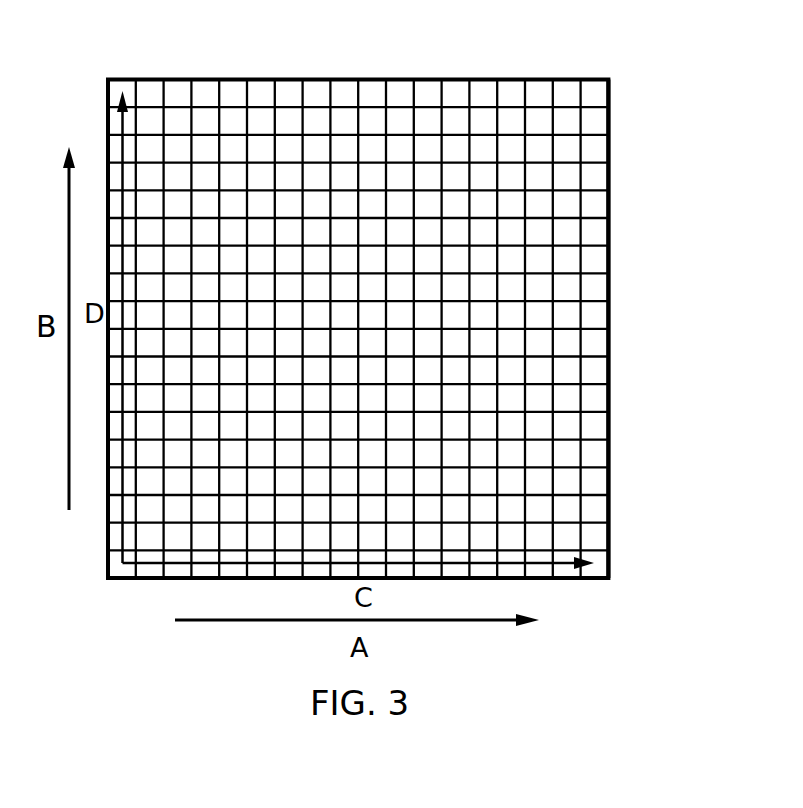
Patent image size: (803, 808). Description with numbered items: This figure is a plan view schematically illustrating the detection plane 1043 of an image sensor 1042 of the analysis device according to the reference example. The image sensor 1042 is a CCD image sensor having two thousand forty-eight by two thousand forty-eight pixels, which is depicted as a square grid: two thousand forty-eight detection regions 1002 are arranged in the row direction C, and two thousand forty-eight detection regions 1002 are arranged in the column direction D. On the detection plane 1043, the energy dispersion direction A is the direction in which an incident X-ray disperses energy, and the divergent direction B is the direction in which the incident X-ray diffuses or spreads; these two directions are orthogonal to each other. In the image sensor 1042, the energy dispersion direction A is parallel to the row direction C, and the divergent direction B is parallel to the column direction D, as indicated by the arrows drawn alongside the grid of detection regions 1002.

The detection region 1002 is at (122, 88).
The image sensor 1042 is at (626, 64).
The detection plane 1043 is at (611, 230).